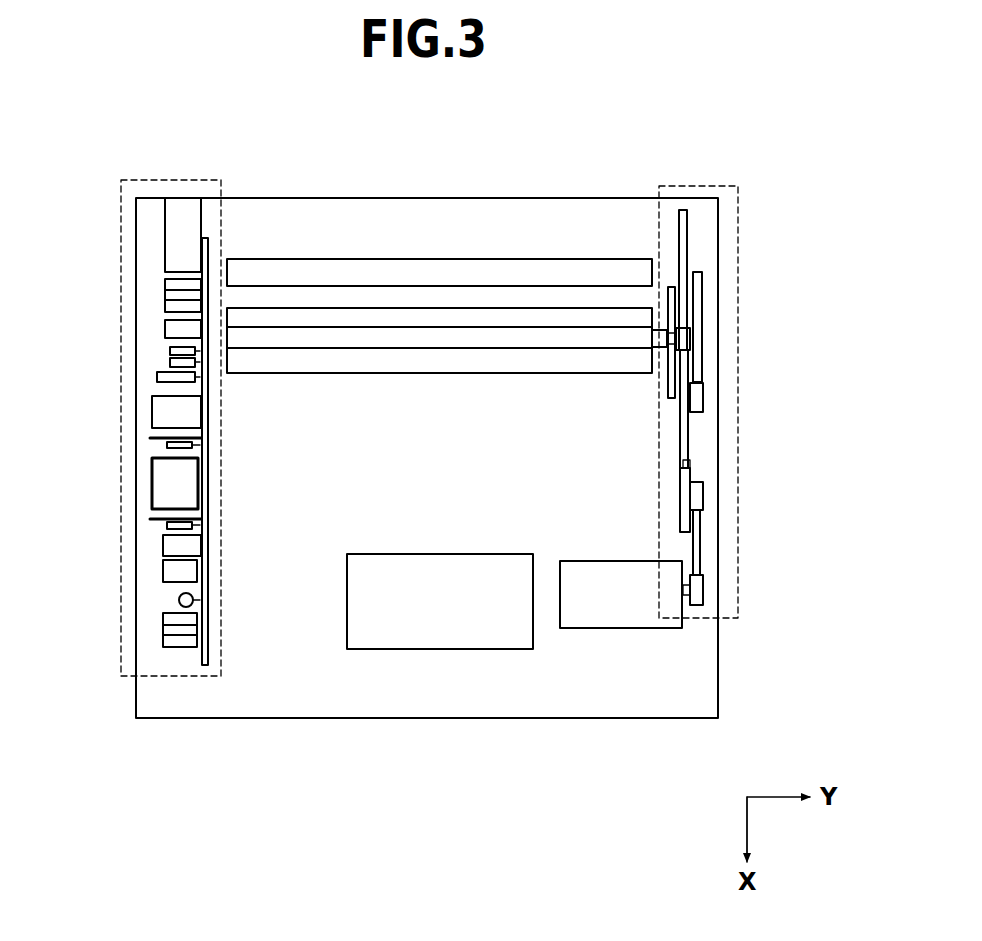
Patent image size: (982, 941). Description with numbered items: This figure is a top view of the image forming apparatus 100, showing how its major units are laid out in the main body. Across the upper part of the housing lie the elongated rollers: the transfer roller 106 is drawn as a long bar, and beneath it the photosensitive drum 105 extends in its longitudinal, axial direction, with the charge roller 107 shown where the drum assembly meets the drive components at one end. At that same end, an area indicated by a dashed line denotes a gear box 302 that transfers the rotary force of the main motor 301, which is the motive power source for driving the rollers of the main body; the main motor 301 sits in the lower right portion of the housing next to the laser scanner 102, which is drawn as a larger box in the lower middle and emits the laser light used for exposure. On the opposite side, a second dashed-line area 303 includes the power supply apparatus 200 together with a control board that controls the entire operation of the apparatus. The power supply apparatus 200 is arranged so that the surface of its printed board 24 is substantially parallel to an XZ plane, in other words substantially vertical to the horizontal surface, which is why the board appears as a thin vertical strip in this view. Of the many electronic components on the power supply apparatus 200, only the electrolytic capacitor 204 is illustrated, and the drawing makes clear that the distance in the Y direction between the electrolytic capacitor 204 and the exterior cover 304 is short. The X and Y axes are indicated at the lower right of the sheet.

The image forming apparatus 100 is at (607, 170).
The transfer roller 106 is at (633, 268).
The charge roller 107 is at (640, 342).
The photosensitive drum 105 is at (615, 362).
The gear box area 302 is at (738, 569).
The power supply and control board area 303 is at (121, 638).
The power supply apparatus 200 is at (170, 662).
The printed board 24 is at (210, 478).
The electrolytic capacitor 204 is at (163, 413).
The exterior cover 304 is at (136, 487).
The laser scanner 102 is at (440, 636).
The main motor 301 is at (620, 605).